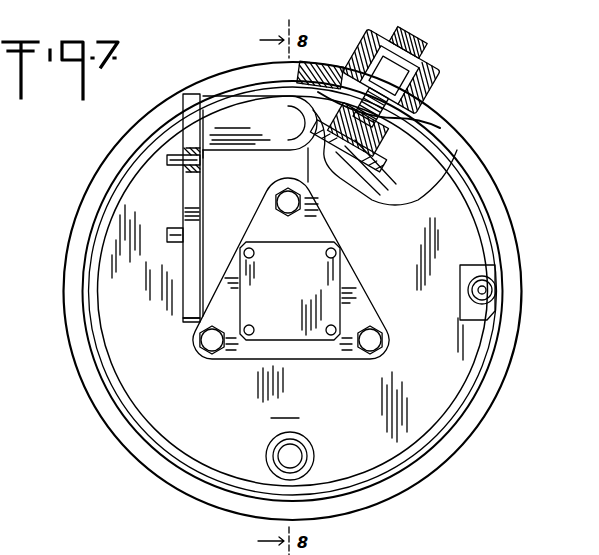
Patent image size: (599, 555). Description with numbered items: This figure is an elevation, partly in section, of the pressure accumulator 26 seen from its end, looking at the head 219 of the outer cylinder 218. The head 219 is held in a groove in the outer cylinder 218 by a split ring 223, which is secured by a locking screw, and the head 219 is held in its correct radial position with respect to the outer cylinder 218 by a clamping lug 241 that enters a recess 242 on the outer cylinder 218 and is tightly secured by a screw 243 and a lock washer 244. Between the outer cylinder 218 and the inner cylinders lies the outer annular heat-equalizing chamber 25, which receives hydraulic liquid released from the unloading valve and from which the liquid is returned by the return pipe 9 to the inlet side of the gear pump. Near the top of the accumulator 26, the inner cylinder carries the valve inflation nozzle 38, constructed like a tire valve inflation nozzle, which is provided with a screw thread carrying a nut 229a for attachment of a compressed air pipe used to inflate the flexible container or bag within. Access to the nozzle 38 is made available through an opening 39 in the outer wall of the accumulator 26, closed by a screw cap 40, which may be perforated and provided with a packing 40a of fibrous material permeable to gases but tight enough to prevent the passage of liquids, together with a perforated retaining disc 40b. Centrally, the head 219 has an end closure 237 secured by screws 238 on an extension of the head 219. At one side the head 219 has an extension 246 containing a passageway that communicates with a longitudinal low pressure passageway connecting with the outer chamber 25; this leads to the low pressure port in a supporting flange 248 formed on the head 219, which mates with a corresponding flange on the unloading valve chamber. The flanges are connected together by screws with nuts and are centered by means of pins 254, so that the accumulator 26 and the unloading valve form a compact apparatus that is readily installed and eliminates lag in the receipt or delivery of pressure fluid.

The return pipe 9 is at (302, 448).
The outer annular heat-equalizing chamber 25 is at (438, 175).
The pressure accumulator 26 is at (519, 182).
The valve inflation nozzle 38 is at (372, 113).
The opening 39 is at (400, 99).
The screw cap 40 is at (420, 86).
The packing 40a is at (412, 44).
The perforated retaining disc 40b is at (418, 63).
The outer cylinder 218 is at (65, 268).
The head 219 is at (339, 407).
The split ring 223 is at (458, 408).
The nut 229a is at (382, 143).
The end closure 237 is at (341, 281).
The screws 238 is at (200, 341).
The clamping lug 241 is at (470, 322).
The recess 242 is at (496, 292).
The screw 243 is at (490, 281).
The lock washer 244 is at (472, 278).
The extension 246 is at (233, 94).
The supporting flange 248 is at (183, 276).
The pins 254 is at (168, 222).